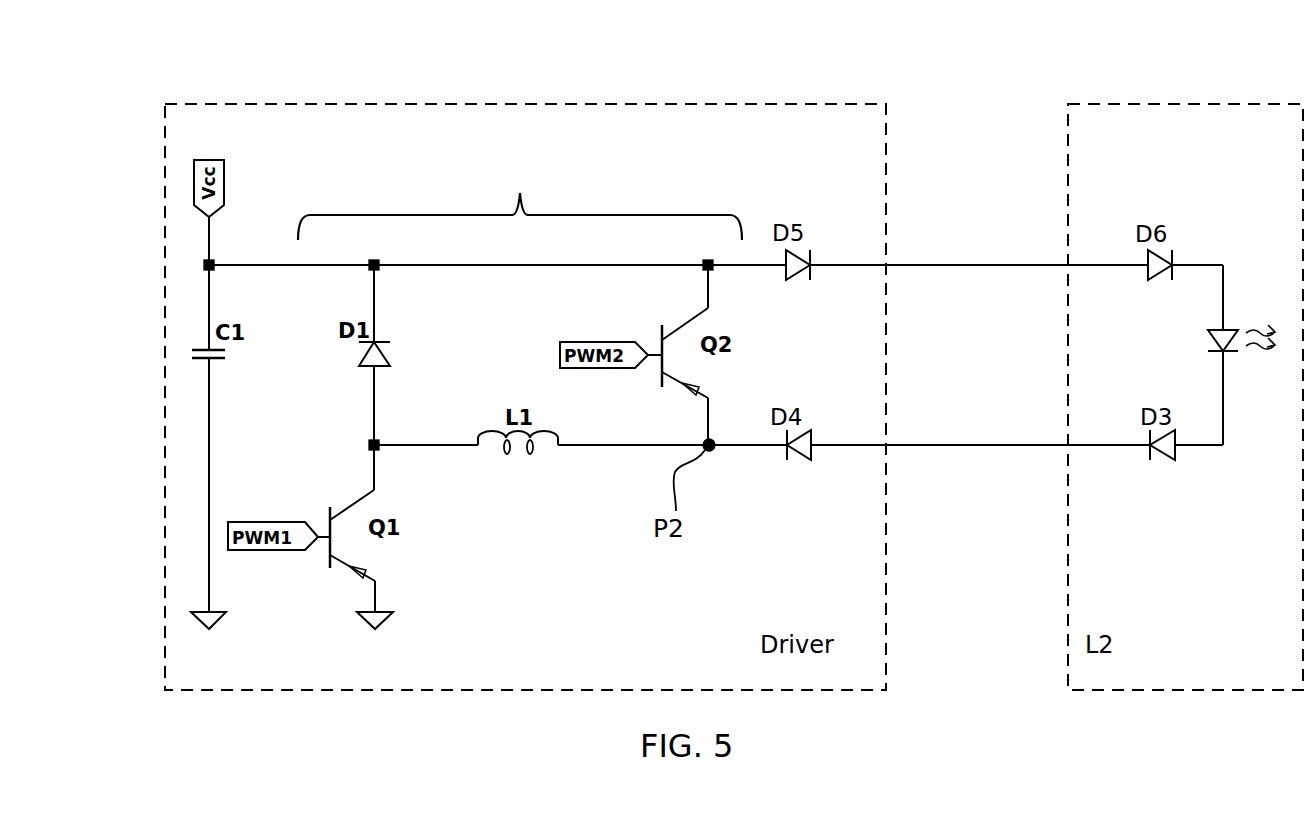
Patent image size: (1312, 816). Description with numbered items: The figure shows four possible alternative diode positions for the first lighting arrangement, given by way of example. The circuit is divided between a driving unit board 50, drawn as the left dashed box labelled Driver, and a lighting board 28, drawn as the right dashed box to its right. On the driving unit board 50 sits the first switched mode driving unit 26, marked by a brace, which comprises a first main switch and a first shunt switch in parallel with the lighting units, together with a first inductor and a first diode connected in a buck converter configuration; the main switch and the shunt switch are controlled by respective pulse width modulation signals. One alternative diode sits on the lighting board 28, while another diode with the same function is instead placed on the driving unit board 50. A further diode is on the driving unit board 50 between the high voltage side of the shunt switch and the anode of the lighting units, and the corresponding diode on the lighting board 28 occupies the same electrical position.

The driving unit board 50 is at (486, 104).
The first switched mode driving unit 26 is at (520, 197).
The lighting board 28 is at (1070, 160).